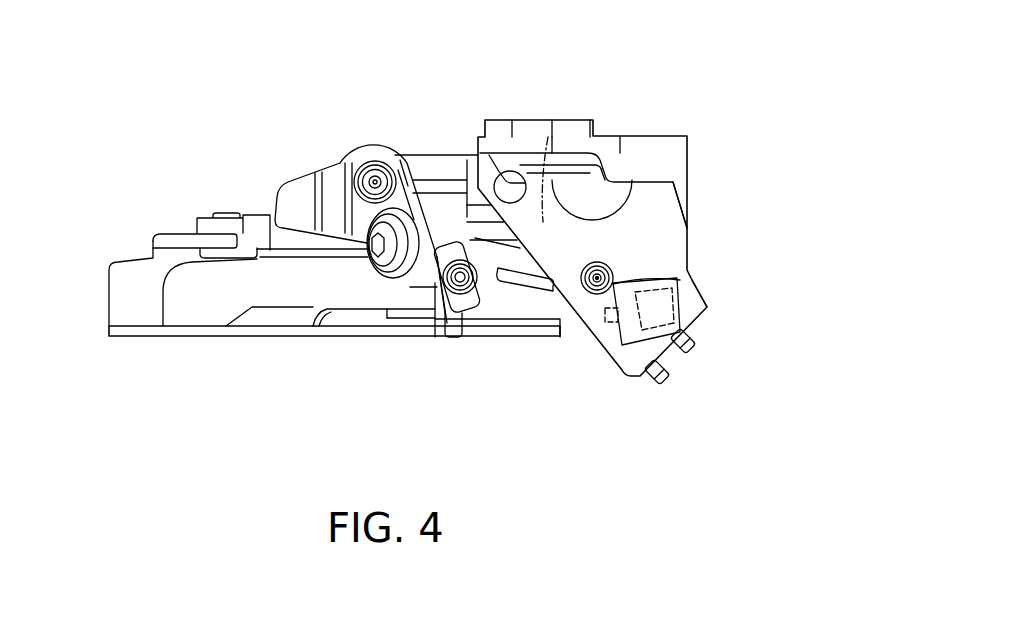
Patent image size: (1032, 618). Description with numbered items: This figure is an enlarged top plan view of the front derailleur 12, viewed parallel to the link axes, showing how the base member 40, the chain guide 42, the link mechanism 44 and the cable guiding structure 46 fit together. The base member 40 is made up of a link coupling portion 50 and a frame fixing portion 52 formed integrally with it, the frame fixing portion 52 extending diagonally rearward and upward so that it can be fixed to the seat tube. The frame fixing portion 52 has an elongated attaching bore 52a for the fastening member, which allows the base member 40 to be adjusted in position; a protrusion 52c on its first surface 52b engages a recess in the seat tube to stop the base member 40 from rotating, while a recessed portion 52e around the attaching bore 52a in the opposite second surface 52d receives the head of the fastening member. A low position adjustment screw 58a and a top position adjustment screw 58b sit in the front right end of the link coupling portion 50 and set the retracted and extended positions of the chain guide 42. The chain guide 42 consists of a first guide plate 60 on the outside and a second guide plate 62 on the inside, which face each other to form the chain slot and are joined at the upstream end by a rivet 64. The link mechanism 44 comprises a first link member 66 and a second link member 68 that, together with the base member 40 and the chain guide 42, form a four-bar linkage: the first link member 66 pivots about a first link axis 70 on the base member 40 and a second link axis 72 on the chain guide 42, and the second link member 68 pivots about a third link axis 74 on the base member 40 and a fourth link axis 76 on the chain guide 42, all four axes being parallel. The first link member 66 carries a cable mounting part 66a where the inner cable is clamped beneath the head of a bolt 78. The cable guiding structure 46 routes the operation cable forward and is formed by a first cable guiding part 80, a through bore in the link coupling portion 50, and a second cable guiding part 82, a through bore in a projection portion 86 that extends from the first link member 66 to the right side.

The front derailleur 12 is at (282, 141).
The base member 40 is at (694, 145).
The chain guide 42 is at (185, 338).
The link mechanism 44 is at (375, 291).
The cable guiding structure 46 is at (507, 420).
The link coupling portion 50 is at (702, 284).
The frame fixing portion 52 is at (633, 134).
The attaching bore 52a is at (612, 165).
The first surface 52b is at (553, 120).
The protrusion 52c is at (497, 118).
The second surface 52d is at (655, 206).
The recessed portion 52e is at (560, 202).
The low position adjustment screw 58a is at (688, 350).
The top position adjustment screw 58b is at (662, 382).
The first guide plate 60 is at (262, 338).
The second guide plate 62 is at (180, 233).
The rivet 64 is at (230, 214).
The first link member 66 is at (440, 157).
The cable mounting part 66a is at (413, 155).
The second link member 68 is at (519, 303).
The first link axis 70 is at (511, 185).
The second link axis 72 is at (373, 175).
The third link axis 74 is at (613, 270).
The fourth link axis 76 is at (450, 282).
The bolt 78 is at (374, 266).
The first cable guiding part 80 is at (620, 315).
The second cable guiding part 82 is at (470, 348).
The projection portion 86 is at (430, 310).